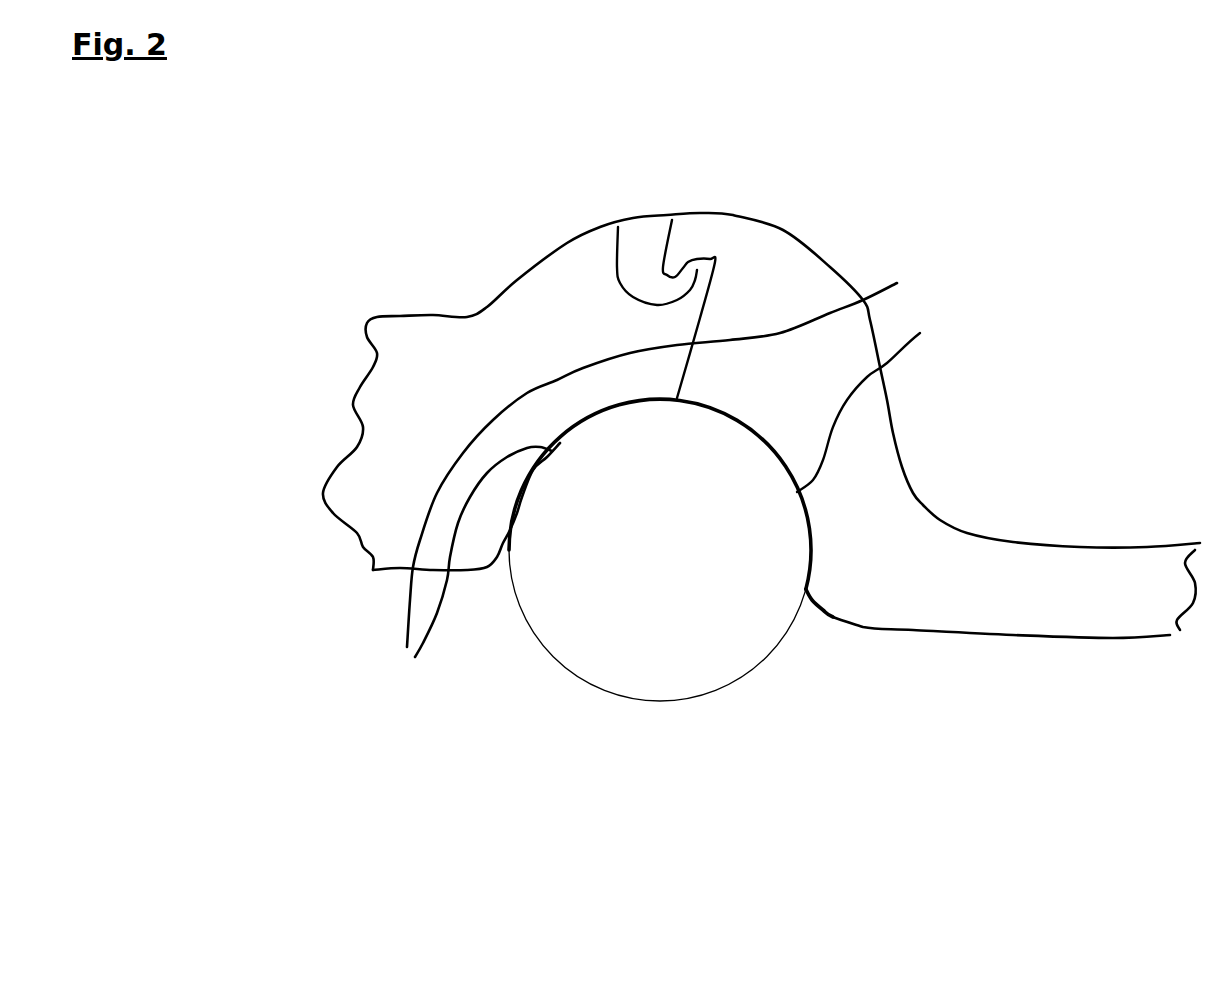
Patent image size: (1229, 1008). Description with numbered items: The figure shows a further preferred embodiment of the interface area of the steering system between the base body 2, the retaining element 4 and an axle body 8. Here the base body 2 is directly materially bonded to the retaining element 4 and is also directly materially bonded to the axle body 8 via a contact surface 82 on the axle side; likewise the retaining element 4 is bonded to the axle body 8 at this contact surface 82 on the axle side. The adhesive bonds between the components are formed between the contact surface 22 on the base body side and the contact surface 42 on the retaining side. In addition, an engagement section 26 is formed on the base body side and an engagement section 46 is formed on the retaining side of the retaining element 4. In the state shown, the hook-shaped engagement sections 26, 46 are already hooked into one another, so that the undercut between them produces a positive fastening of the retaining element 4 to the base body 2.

The base body 2 is at (406, 290).
The retaining element 4 is at (945, 503).
The axle body 8 is at (748, 660).
The contact surface on the base body side 22 is at (383, 705).
The engagement section on the base body side 26 is at (618, 227).
The contact surface on the retaining side 42 is at (897, 283).
The engagement section on the retaining side 46 is at (677, 248).
The contact surface on the axle side 82 is at (563, 433).